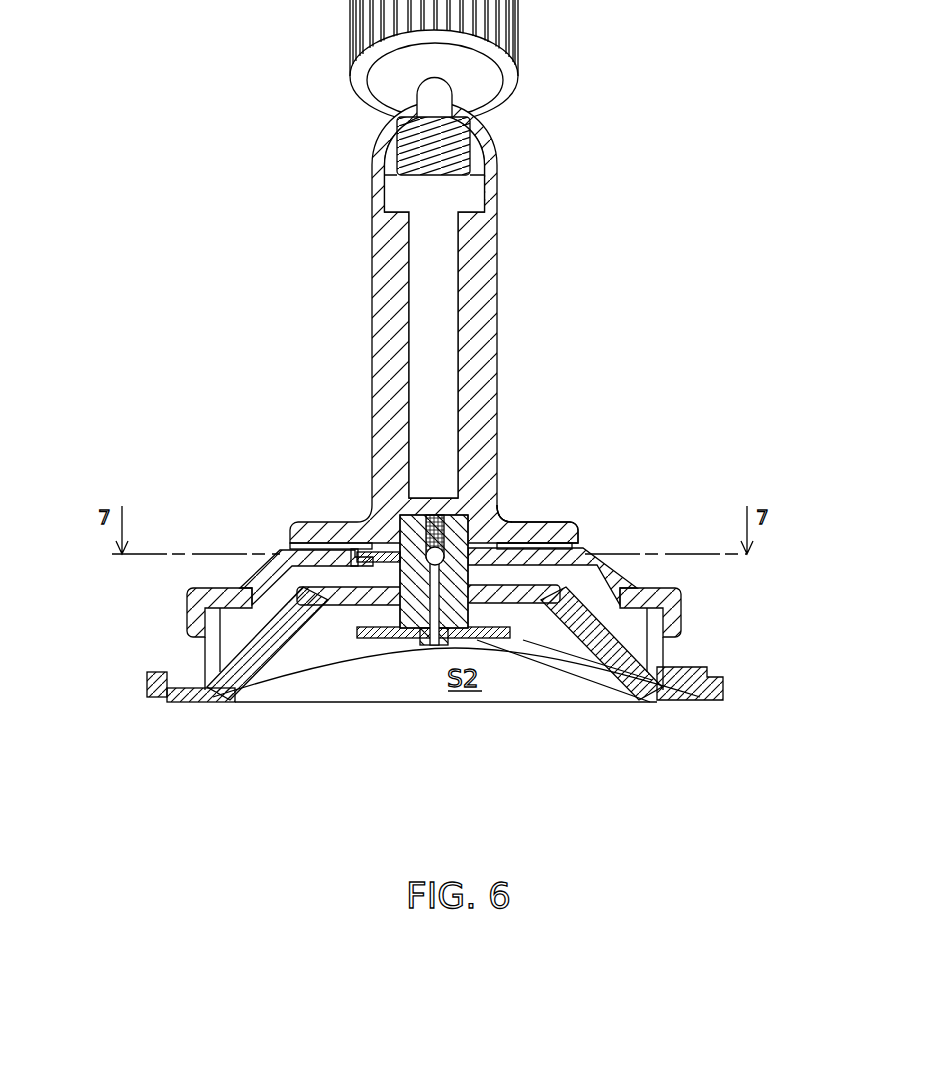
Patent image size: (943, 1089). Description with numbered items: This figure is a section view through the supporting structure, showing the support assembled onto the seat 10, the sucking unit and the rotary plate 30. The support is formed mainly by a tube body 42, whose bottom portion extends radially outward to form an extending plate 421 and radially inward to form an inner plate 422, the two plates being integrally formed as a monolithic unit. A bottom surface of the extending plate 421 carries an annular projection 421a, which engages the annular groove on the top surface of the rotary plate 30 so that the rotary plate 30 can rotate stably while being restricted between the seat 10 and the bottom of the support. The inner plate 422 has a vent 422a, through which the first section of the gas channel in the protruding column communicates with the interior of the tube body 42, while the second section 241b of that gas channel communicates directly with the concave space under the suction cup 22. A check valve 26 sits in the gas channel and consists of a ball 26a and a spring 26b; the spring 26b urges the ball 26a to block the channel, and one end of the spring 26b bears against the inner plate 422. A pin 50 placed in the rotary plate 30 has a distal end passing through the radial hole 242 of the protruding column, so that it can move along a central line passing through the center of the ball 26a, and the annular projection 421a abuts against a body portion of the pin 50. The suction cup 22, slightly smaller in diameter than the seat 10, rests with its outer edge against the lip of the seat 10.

The tube body 42 is at (372, 250).
The extending plate 421 is at (578, 522).
The annular projection 421a is at (357, 543).
The inner plate 422 is at (432, 515).
The vent 422a is at (440, 497).
The check valve 26 is at (594, 455).
The ball 26a is at (500, 547).
The spring 26b is at (482, 522).
The hole 242 is at (400, 552).
The second section 241b is at (405, 638).
The pin 50 is at (383, 580).
The rotary plate 30 is at (168, 603).
The suction cup 22 is at (603, 680).
The seat 10 is at (131, 698).